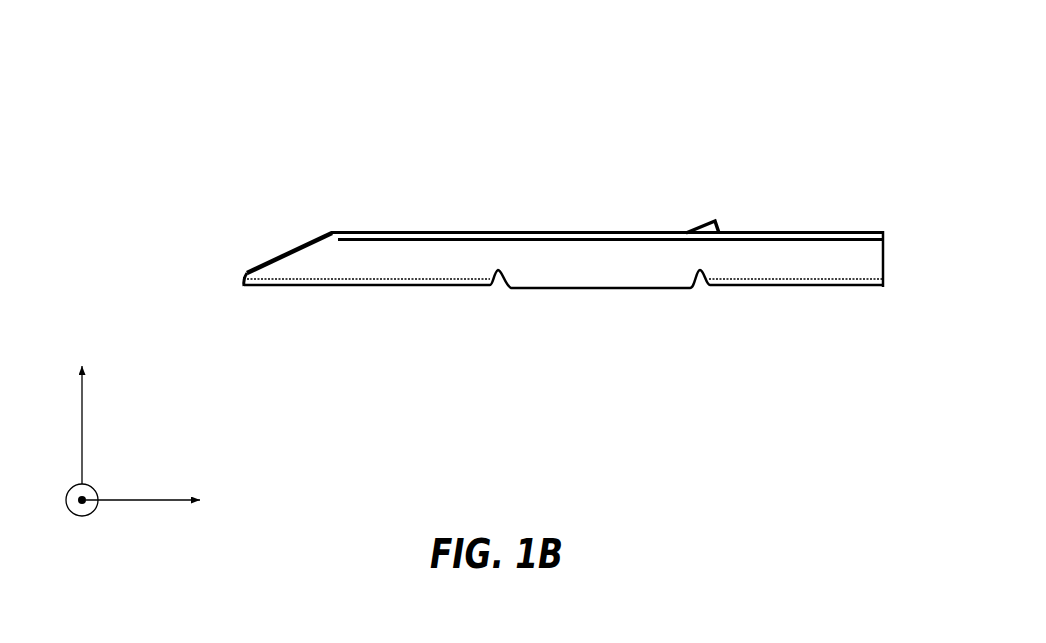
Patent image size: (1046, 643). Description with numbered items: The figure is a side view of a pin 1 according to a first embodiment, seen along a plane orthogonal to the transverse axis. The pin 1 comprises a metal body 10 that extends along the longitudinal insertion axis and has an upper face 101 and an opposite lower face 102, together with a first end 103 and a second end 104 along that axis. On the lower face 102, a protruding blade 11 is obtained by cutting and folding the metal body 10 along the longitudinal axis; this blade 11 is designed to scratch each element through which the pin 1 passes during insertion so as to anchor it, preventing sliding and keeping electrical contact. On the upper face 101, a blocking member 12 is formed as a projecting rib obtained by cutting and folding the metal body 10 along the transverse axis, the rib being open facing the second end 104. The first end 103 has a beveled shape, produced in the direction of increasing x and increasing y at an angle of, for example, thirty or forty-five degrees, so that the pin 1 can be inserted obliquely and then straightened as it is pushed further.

The pin 1 is at (255, 122).
The metal body 10 is at (387, 230).
The protruding blade 11 is at (600, 290).
The blocking member 12 is at (711, 220).
The upper face 101 is at (866, 231).
The lower face 102 is at (417, 291).
The first end 103 is at (243, 284).
The second end 104 is at (888, 259).